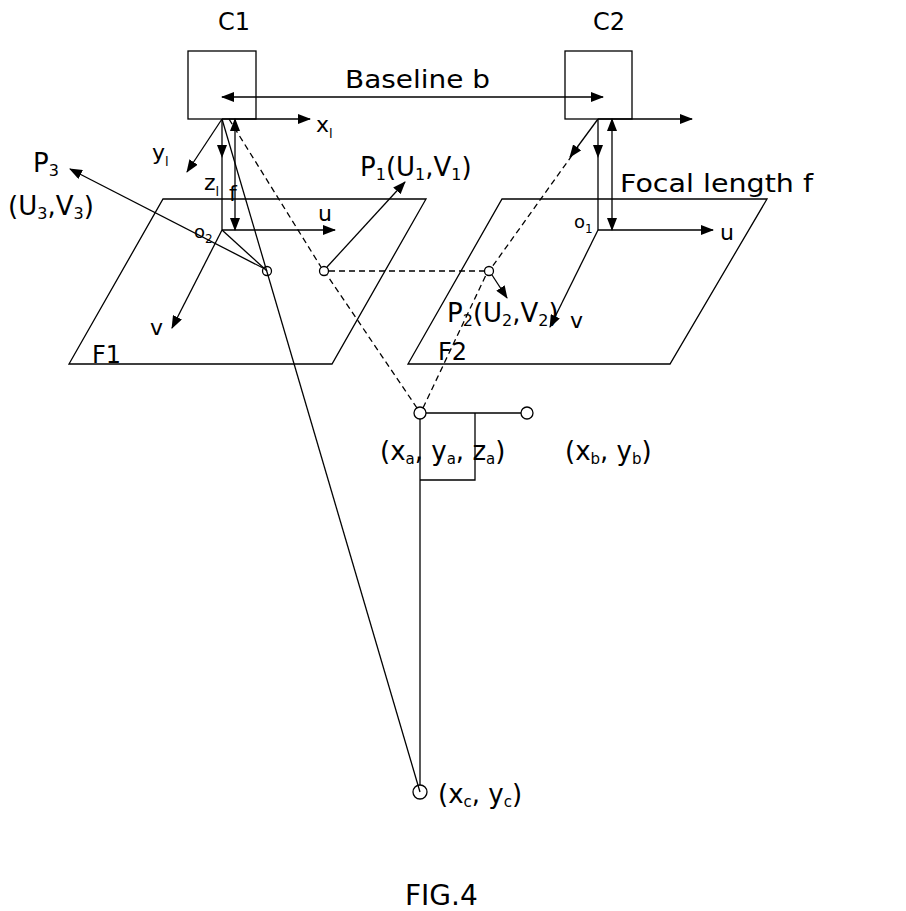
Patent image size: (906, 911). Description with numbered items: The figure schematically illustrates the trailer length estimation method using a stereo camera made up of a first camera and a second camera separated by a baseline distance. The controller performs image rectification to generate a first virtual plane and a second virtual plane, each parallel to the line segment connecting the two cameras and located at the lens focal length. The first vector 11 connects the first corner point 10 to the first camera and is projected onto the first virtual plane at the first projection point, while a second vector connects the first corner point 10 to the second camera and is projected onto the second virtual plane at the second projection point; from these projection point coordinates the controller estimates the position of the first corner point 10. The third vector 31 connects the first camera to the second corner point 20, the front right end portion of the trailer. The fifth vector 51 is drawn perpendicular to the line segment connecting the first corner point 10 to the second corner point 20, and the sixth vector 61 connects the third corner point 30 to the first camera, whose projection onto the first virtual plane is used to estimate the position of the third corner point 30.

The first corner point 10 is at (414, 410).
The first vector 11 is at (272, 193).
The second corner point 20 is at (533, 413).
The third corner point 30 is at (426, 784).
The third vector 31 is at (548, 185).
The fifth vector 51 is at (421, 562).
The sixth vector 61 is at (337, 513).